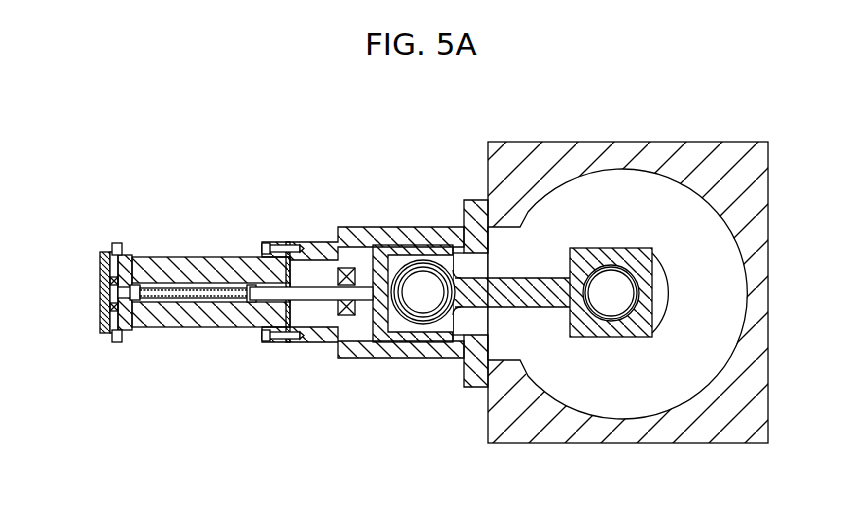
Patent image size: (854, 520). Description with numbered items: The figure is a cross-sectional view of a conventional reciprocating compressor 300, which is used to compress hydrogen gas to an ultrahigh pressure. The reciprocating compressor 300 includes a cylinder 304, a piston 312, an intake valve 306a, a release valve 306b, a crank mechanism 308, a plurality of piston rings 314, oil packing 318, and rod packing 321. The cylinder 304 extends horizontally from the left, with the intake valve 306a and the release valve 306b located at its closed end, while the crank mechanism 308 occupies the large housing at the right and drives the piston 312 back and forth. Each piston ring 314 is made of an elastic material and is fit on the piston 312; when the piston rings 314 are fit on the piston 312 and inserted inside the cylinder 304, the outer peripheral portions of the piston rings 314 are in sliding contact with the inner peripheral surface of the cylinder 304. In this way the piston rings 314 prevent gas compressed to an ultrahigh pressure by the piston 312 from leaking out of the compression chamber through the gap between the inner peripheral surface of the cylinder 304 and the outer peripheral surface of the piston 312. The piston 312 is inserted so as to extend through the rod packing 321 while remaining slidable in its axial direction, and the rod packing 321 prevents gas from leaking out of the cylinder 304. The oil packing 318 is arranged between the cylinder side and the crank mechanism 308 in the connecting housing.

The reciprocating compressor 300 is at (620, 108).
The cylinder 304 is at (158, 262).
The intake valve 306a is at (111, 281).
The release valve 306b is at (111, 307).
The crank mechanism 308 is at (542, 340).
The piston 312 is at (236, 293).
The piston ring 314 is at (207, 295).
The oil packing 318 is at (364, 262).
The rod packing 321 is at (280, 283).